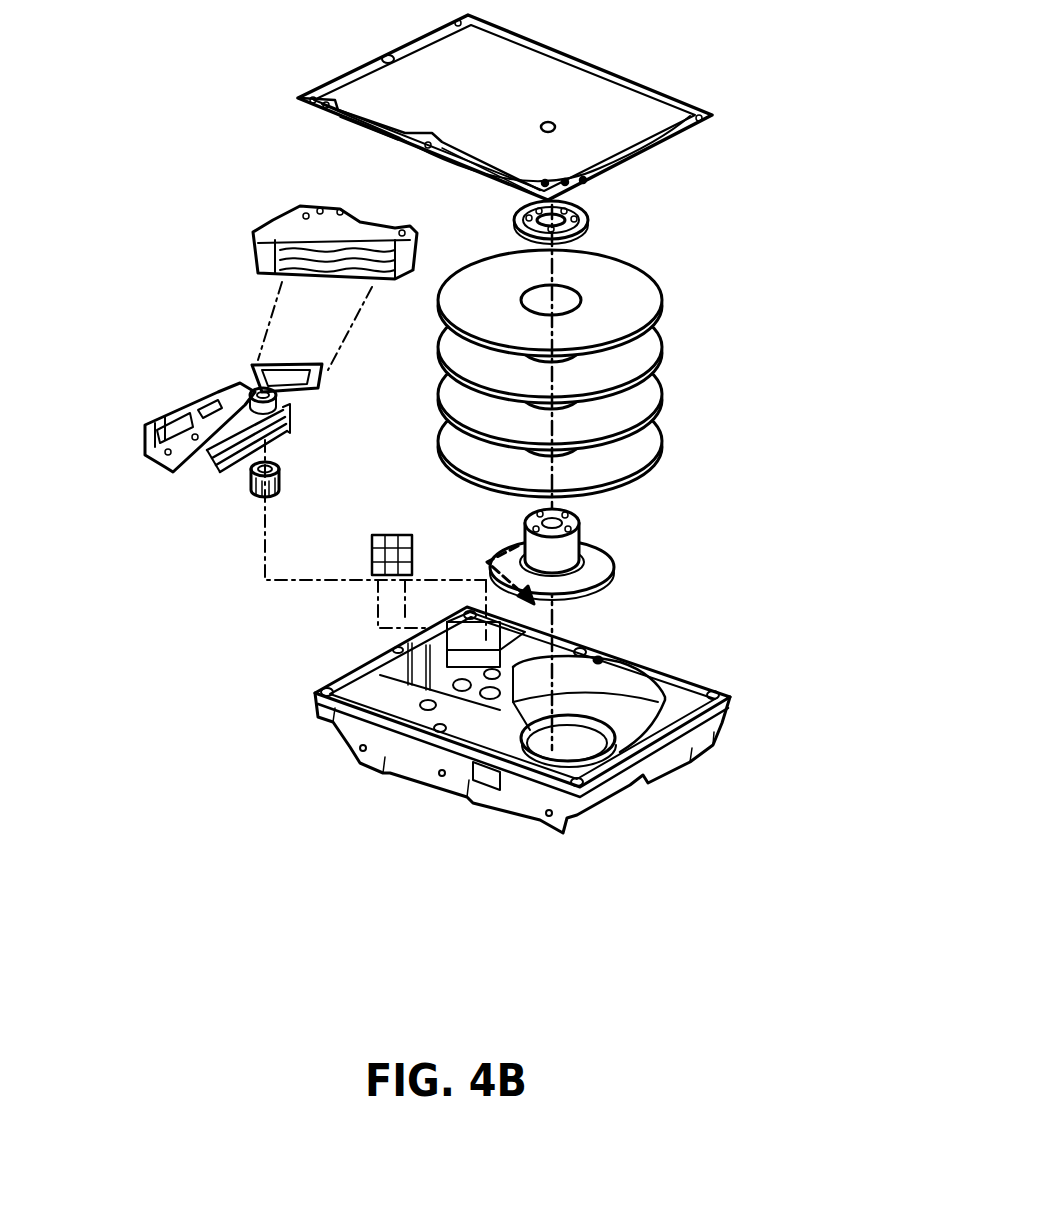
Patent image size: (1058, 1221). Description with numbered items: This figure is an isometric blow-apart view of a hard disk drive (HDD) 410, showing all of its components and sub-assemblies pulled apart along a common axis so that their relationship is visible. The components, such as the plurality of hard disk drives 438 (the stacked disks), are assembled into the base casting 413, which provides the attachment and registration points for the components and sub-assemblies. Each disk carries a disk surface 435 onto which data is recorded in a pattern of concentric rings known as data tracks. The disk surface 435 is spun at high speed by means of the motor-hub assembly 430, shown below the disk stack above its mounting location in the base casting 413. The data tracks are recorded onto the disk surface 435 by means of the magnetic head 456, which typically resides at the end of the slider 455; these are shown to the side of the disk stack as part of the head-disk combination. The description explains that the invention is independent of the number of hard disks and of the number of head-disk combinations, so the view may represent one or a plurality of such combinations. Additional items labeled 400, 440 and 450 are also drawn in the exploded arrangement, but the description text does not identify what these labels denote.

The spindle assembly 400 is at (585, 505).
The hard disk drive 410 is at (720, 815).
The base casting 413 is at (330, 712).
The motor-hub assembly 430 is at (612, 552).
The disk surface 435 is at (706, 485).
The hard disk drive 438 is at (715, 232).
The actuator 440 is at (250, 392).
The voice coil motor 450 is at (253, 212).
The slider 455 is at (213, 465).
The magnetic head 456 is at (207, 468).